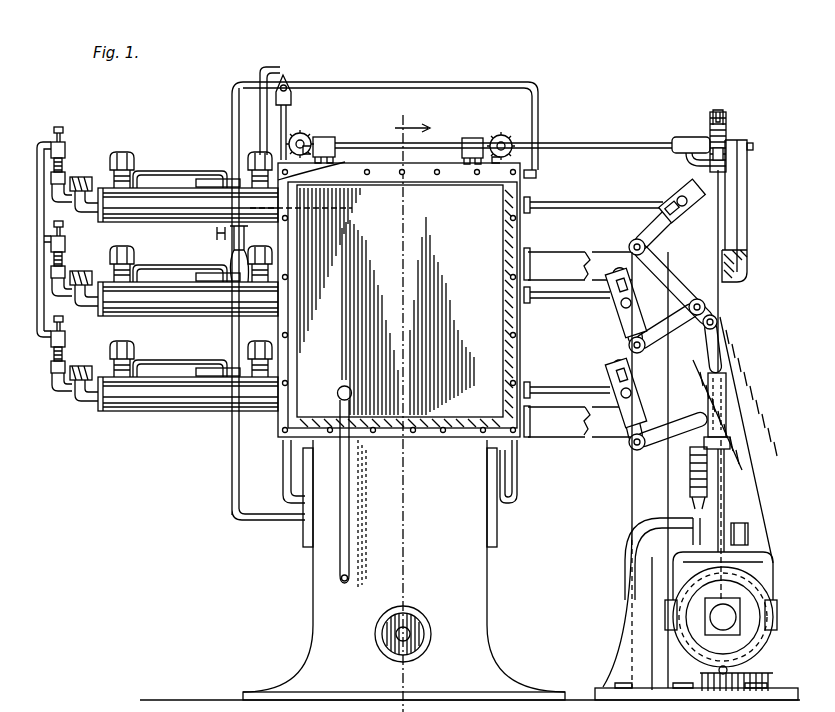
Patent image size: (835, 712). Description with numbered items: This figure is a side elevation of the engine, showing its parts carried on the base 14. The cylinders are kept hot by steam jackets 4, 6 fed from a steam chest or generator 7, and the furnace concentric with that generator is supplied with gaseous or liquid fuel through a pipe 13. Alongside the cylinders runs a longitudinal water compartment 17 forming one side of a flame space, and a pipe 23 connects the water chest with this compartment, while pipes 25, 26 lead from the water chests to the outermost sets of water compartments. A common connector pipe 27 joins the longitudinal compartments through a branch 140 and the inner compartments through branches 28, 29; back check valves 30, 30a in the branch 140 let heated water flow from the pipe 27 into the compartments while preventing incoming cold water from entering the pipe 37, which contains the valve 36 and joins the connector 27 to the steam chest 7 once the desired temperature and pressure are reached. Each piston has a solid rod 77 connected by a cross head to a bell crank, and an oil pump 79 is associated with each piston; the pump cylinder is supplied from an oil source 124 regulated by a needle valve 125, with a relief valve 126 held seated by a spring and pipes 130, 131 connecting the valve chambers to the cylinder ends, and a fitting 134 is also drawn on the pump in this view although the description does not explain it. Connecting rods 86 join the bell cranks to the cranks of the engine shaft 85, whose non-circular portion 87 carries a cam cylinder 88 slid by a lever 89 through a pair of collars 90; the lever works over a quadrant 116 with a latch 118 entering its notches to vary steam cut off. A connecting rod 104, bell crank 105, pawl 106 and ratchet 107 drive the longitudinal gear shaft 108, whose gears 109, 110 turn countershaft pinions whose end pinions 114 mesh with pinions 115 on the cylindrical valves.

The steam jacket 4 is at (412, 406).
The steam jacket 6 is at (301, 208).
The steam chest 7 is at (502, 478).
The fuel pipe 13 is at (432, 633).
The base 14 is at (490, 572).
The water compartment 17 is at (510, 366).
The pipe 23 is at (341, 565).
The pipe 25 is at (518, 500).
The pipe 26 is at (283, 494).
The common connector pipe 27 is at (462, 92).
The branch 28 is at (536, 184).
The branch 29 is at (323, 164).
The back check valve 30 is at (291, 84).
The back check valve 30a is at (222, 182).
The valve 36 is at (222, 240).
The pipe 37 is at (236, 288).
The piston rod 77 is at (560, 392).
The oil pump 79 is at (150, 410).
The engine shaft 85 is at (705, 620).
The connecting rod 86 is at (745, 458).
The non-circular shaft portion 87 is at (700, 604).
The cam cylinder 88 is at (757, 630).
The lever 89 is at (728, 492).
The collar 90 is at (760, 652).
The connecting rod 104 is at (725, 233).
The bell crank 105 is at (728, 138).
The pawl 106 is at (720, 110).
The ratchet 107 is at (698, 136).
The gear shaft 108 is at (385, 138).
The gear 109 is at (498, 135).
The gear 110 is at (312, 136).
The pinion 114 is at (472, 136).
The pinion 115 is at (505, 156).
The quadrant 116 is at (690, 470).
The latch 118 is at (727, 388).
The oil source 124 is at (66, 150).
The needle valve 125 is at (66, 326).
The relief valve 126 is at (100, 172).
The pipe 130 is at (147, 172).
The pipe 131 is at (174, 180).
The nut 134 is at (122, 152).
The branch 140 is at (200, 200).